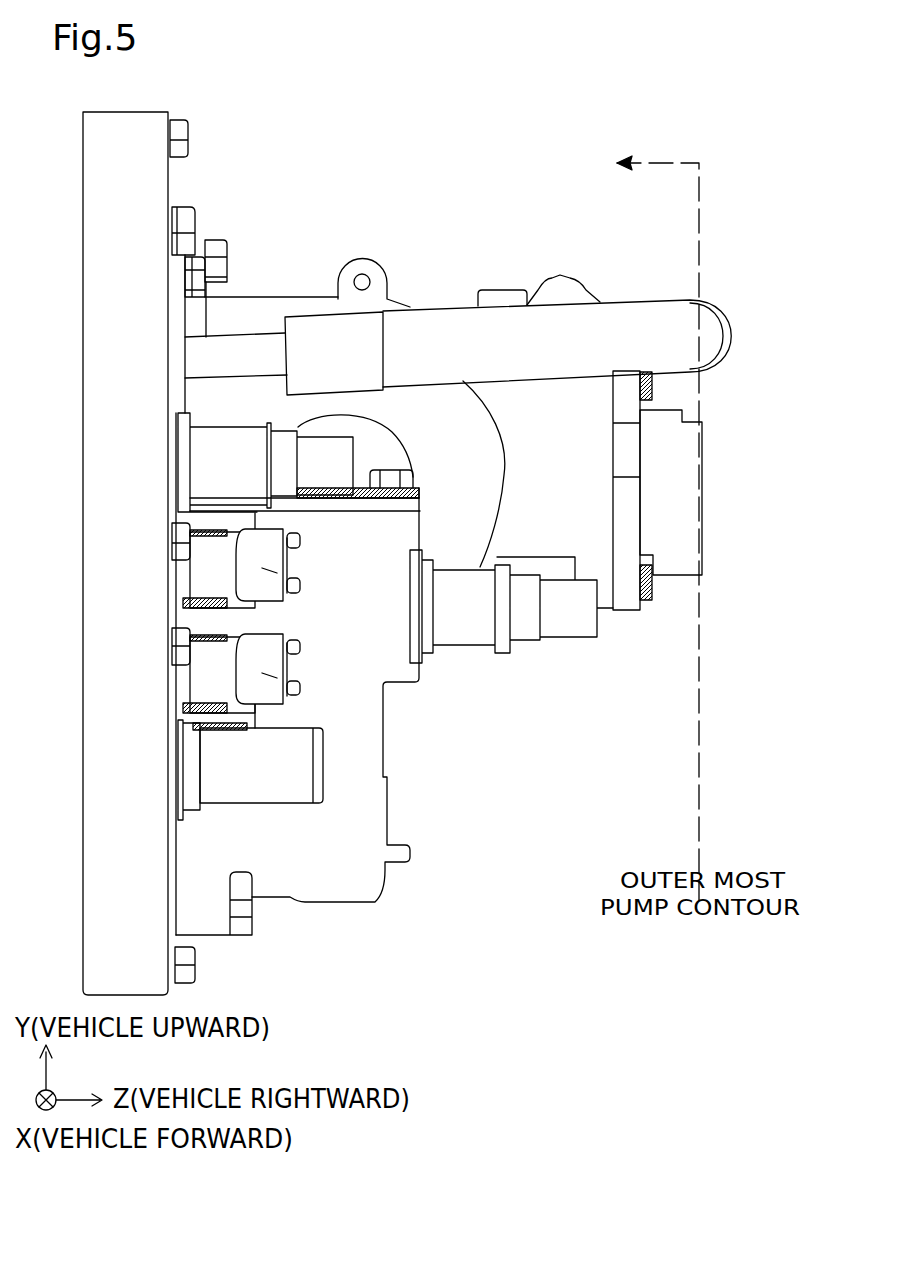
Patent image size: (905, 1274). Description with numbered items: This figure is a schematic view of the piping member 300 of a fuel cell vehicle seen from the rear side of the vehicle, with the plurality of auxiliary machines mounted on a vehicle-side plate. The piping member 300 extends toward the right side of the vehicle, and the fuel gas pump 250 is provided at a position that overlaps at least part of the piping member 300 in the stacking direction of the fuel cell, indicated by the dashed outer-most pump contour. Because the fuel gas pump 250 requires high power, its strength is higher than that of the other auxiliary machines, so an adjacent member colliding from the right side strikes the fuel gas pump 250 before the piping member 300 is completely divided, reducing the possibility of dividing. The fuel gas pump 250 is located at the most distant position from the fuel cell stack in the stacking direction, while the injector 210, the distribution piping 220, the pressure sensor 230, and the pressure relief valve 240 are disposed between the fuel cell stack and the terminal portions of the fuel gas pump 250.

The injector 210 is at (295, 682).
The distribution piping 220 is at (297, 590).
The pressure sensor 230 is at (278, 478).
The pressure relief valve 240 is at (267, 800).
The fuel gas pump 250 is at (708, 483).
The piping member 300 is at (719, 296).